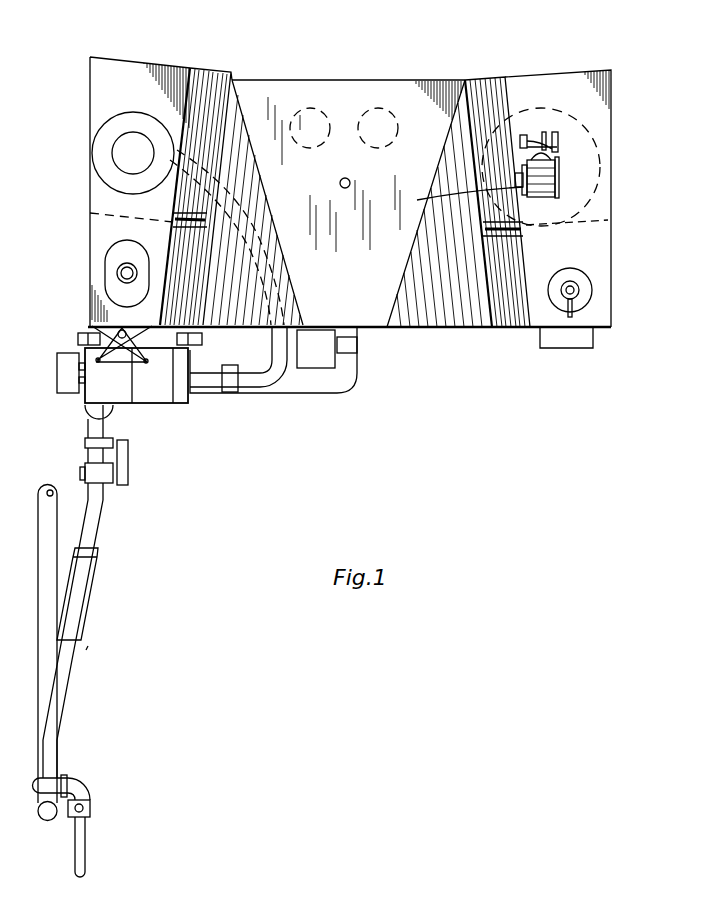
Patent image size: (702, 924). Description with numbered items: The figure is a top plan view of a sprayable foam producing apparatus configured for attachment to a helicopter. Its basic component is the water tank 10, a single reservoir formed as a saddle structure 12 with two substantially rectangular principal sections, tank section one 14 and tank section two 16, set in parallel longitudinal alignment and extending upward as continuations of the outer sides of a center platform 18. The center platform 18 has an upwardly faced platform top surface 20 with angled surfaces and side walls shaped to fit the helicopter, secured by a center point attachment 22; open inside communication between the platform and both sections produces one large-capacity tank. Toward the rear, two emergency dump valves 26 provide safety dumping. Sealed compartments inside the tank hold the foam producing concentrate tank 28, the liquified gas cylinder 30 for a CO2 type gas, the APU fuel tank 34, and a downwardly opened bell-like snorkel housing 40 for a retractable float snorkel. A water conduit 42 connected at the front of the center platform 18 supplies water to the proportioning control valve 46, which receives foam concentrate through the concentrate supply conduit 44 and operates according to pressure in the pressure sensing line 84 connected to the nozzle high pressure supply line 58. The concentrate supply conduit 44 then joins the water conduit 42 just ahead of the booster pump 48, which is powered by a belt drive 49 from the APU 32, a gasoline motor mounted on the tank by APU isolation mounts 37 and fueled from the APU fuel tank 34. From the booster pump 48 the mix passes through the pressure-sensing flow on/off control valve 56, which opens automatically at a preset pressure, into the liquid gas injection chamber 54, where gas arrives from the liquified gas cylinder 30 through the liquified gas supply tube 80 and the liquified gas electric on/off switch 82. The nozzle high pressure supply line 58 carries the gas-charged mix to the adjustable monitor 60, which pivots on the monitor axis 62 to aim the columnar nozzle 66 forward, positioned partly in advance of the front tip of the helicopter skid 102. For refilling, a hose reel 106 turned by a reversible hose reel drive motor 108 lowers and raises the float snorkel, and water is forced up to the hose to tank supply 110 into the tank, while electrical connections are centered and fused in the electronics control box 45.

The water tank 10 is at (90, 78).
The saddle structure 12 is at (268, 80).
The tank section one 14 is at (611, 246).
The tank section two 16 is at (90, 236).
The center platform 18 is at (372, 80).
The platform top surface 20 is at (365, 305).
The center point attachment 22 is at (350, 180).
The emergency dump valves 26 is at (310, 108).
The foam producing concentrate tank 28 is at (98, 144).
The liquified gas cylinder 30 is at (583, 292).
The APU 32 is at (95, 392).
The APU fuel tank 34 is at (108, 277).
The APU isolation mounts 37 is at (97, 326).
The snorkel housing 40 is at (548, 108).
The water conduit 42 is at (340, 380).
The concentrate supply conduit 44 is at (233, 210).
The electronics control box 45 is at (575, 349).
The proportioning control valve 46 is at (230, 392).
The booster pump 48 is at (103, 415).
The belt drive 49 is at (57, 367).
The liquid gas injection chamber 54 is at (80, 600).
The flow on/off control valve 56 is at (98, 483).
The nozzle high pressure supply line 58 is at (67, 650).
The adjustable monitor 60 is at (92, 807).
The monitor axis 62 is at (62, 780).
The columnar nozzle 66 is at (86, 855).
The liquified gas supply tube 80 is at (570, 318).
The liquified gas electric on/off switch 82 is at (573, 284).
The pressure sensing line 84 is at (86, 650).
The helicopter skid 102 is at (45, 498).
The hose reel 106 is at (559, 177).
The hose reel drive motor 108 is at (532, 148).
The hose to tank supply 110 is at (457, 193).